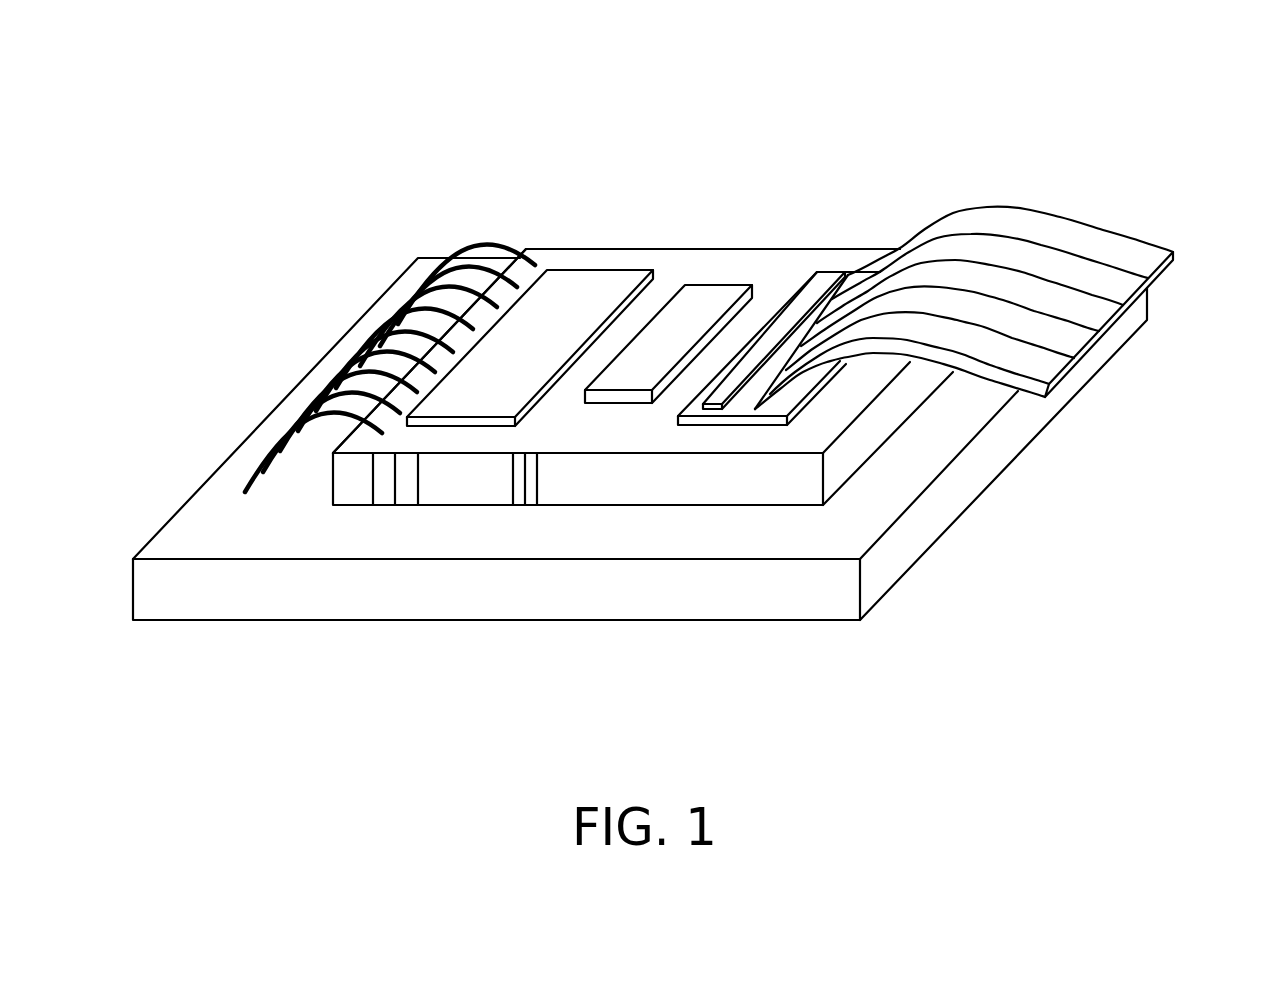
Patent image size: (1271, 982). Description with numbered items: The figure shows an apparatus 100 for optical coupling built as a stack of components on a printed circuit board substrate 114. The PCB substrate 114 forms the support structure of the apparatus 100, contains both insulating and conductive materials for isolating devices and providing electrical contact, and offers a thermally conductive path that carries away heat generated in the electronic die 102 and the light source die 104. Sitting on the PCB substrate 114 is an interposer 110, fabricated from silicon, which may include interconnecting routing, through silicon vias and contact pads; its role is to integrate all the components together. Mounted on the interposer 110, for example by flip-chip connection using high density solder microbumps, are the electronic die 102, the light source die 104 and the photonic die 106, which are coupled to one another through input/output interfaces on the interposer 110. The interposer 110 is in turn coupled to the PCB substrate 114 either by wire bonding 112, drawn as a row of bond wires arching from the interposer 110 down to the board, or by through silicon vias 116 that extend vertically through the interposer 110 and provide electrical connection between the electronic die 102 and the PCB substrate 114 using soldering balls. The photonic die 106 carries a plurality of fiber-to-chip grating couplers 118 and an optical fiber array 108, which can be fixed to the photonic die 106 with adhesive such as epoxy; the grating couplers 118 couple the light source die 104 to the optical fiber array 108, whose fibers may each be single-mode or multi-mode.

The apparatus for optical coupling 100 is at (208, 197).
The electronic die 102 is at (622, 283).
The light source die 104 is at (710, 300).
The photonic die 106 is at (860, 278).
The optical fiber array 108 is at (1112, 238).
The interposer 110 is at (565, 258).
The wire bonding 112 is at (478, 240).
The printed circuit board (PCB) substrate 114 is at (203, 522).
The through silicon vias (TSV) 116 is at (384, 477).
The fiber-to-chip grating couplers 118 is at (830, 280).